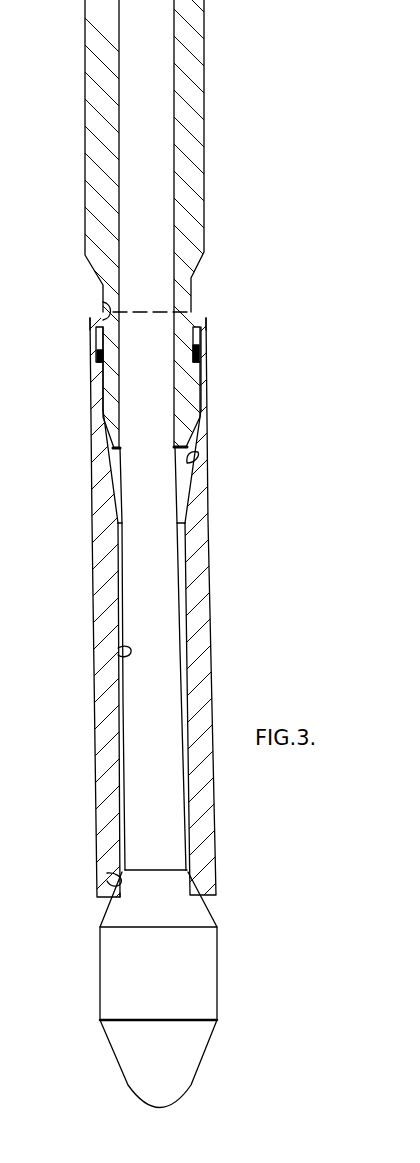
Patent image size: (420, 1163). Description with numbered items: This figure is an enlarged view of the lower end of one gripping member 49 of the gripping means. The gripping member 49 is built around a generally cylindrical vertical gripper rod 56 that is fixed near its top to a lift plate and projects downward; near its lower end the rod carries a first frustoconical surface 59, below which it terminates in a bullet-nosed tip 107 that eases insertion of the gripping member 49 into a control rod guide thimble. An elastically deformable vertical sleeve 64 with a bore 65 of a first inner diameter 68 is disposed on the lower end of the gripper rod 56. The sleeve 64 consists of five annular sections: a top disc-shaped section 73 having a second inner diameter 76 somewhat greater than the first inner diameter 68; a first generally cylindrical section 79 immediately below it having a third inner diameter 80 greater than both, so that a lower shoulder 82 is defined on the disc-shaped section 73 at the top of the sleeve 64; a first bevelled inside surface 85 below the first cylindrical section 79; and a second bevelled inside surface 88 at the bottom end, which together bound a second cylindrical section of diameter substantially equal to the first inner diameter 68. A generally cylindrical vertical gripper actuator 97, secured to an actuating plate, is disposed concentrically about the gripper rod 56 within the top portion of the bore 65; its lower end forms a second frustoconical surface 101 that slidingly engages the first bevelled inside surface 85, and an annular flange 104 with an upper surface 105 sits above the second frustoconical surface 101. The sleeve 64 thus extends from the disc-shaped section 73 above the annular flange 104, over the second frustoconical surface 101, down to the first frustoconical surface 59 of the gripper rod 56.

The gripping member 49 is at (64, 223).
The vertical gripper rod 56 is at (153, 97).
The first frustoconical surface 59 is at (210, 907).
The elastically deformable vertical sleeve 64 is at (98, 597).
The bore 65 is at (138, 305).
The first inner diameter 68 is at (118, 648).
The top disc-shaped section 73 is at (200, 320).
The second inner diameter 76 is at (103, 308).
The first generally cylindrical section 79 is at (207, 328).
The third inner diameter 80 is at (184, 346).
The lower shoulder 82 is at (97, 335).
The first bevelled inside surface 85 is at (200, 452).
The second bevelled inside surface 88 is at (107, 873).
The vertical gripper actuator 97 is at (207, 200).
The second frustoconical surface 101 is at (103, 430).
The annular flange 104 is at (100, 378).
The upper surface 105 is at (100, 347).
The bullet-nosed tip 107 is at (202, 1070).